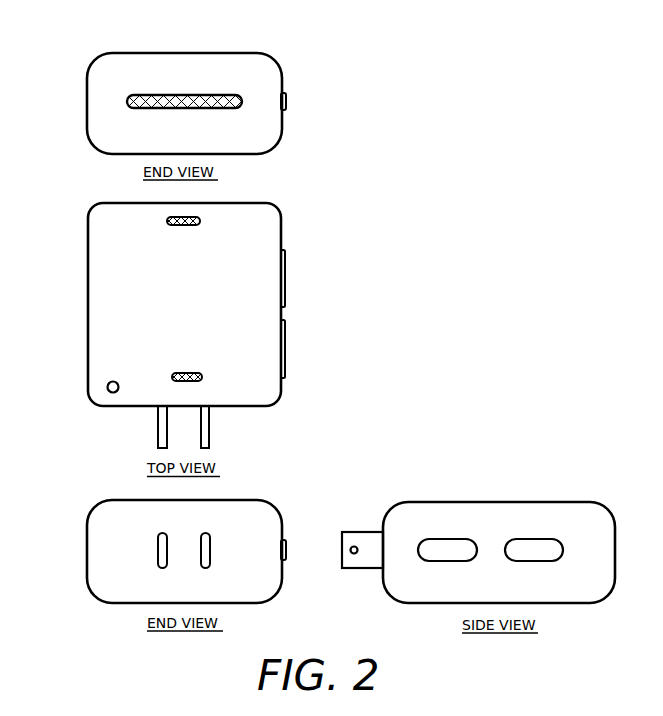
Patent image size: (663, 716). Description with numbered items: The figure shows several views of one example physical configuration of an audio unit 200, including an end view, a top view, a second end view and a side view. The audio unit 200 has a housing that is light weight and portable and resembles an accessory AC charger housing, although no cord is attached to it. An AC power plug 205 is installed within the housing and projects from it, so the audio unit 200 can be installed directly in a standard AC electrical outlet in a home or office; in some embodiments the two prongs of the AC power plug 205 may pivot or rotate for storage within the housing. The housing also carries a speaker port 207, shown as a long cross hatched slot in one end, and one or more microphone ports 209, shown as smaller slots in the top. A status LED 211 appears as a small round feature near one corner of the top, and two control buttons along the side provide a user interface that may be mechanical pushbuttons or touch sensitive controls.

The audio unit 200 is at (528, 114).
The AC power plug 205 is at (182, 548).
The speaker port 207 is at (237, 98).
The microphone port 209 is at (202, 376).
The status LED 211 is at (108, 389).